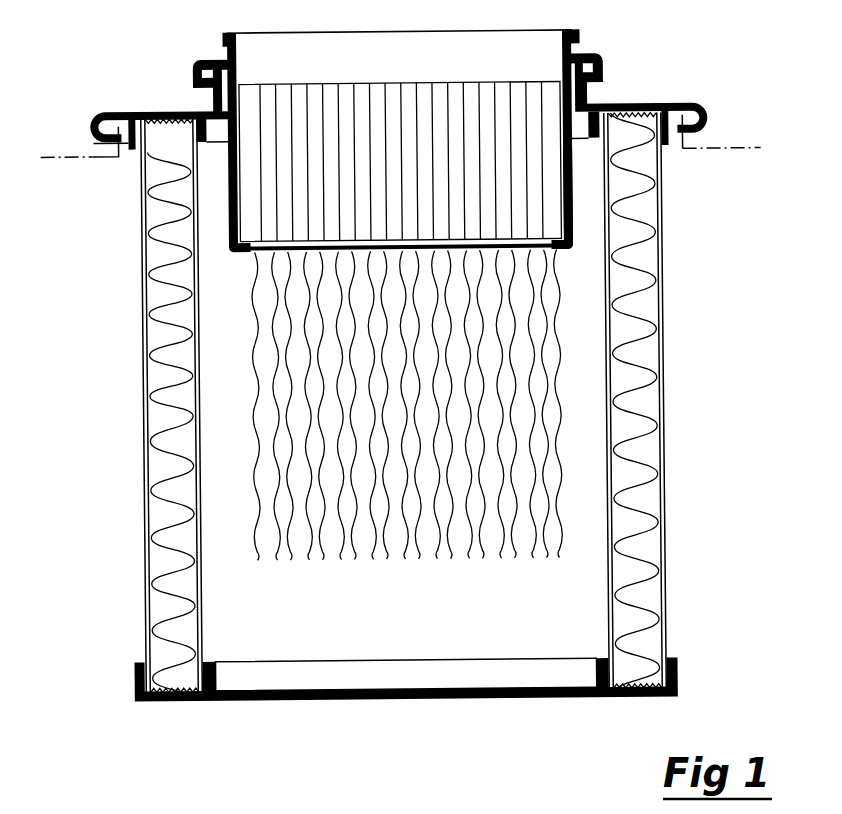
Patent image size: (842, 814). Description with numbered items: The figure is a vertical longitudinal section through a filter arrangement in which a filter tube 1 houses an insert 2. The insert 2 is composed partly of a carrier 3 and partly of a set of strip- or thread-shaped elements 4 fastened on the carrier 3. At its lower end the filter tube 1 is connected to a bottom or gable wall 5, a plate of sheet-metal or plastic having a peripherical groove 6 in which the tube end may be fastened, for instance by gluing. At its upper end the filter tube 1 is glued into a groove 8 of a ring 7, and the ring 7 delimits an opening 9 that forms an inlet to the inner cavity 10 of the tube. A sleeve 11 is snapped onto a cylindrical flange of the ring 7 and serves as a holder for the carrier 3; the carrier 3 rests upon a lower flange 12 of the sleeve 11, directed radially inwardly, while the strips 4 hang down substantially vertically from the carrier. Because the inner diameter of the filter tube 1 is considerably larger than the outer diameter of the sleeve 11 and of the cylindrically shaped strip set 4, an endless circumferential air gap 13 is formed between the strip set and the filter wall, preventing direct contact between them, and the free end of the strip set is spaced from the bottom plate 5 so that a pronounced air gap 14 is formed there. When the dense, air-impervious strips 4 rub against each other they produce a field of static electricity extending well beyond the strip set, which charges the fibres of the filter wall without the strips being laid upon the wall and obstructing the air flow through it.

The filter tube 1 is at (143, 485).
The insert 2 is at (213, 243).
The carrier 3 is at (532, 127).
The strip- or thread-shaped elements 4 is at (530, 499).
The bottom or gable wall 5 is at (366, 702).
The peripherical groove 6 is at (642, 670).
The ring 7 is at (140, 112).
The groove 8 is at (170, 138).
The opening 9 is at (208, 99).
The inner cavity 10 is at (217, 572).
The sleeve 11 is at (570, 192).
The lower flange 12 is at (561, 249).
The air gap 13 is at (218, 378).
The air gap 14 is at (467, 632).